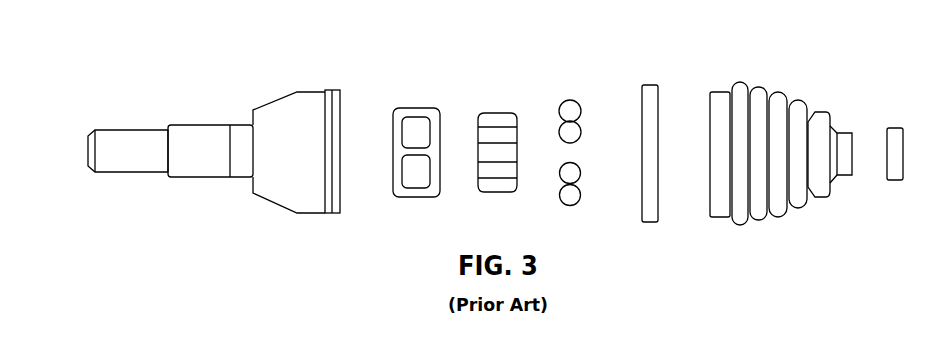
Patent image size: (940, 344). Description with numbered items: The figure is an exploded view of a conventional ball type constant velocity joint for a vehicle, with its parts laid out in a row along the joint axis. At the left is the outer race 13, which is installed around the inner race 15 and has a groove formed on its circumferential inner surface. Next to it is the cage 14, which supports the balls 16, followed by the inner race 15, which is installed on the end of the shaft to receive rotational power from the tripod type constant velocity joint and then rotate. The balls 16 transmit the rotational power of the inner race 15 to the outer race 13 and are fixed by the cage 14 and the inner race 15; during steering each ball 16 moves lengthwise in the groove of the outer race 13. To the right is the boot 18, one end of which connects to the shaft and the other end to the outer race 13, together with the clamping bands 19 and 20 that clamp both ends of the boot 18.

The outer race 13 is at (286, 98).
The cage 14 is at (416, 106).
The inner race 15 is at (497, 113).
The balls 16 is at (571, 100).
The boot 18 is at (778, 92).
The clamping band 19 is at (893, 128).
The clamping band 20 is at (652, 85).